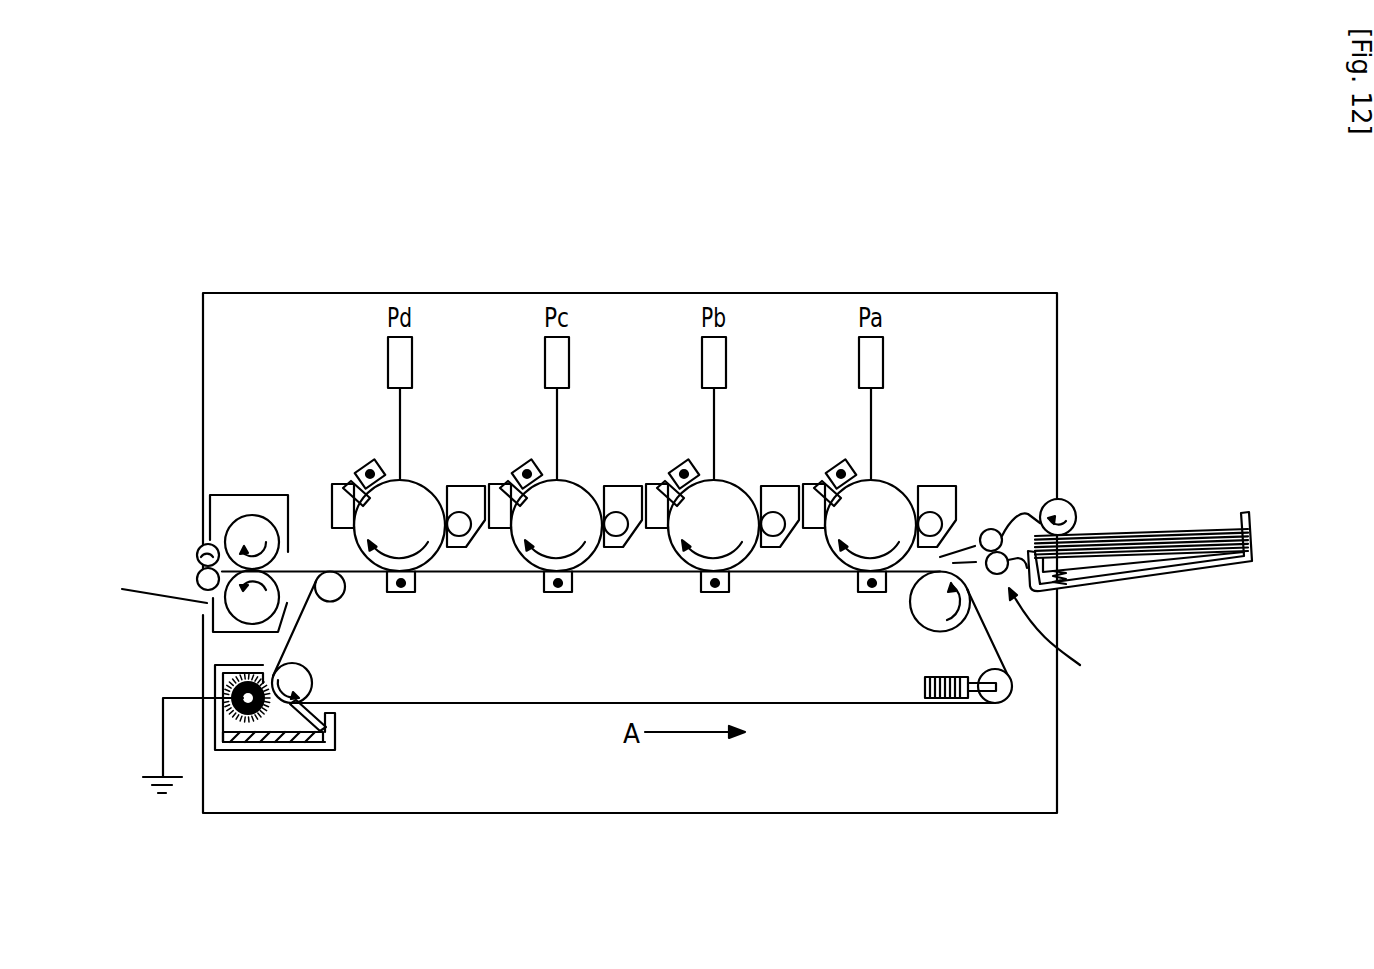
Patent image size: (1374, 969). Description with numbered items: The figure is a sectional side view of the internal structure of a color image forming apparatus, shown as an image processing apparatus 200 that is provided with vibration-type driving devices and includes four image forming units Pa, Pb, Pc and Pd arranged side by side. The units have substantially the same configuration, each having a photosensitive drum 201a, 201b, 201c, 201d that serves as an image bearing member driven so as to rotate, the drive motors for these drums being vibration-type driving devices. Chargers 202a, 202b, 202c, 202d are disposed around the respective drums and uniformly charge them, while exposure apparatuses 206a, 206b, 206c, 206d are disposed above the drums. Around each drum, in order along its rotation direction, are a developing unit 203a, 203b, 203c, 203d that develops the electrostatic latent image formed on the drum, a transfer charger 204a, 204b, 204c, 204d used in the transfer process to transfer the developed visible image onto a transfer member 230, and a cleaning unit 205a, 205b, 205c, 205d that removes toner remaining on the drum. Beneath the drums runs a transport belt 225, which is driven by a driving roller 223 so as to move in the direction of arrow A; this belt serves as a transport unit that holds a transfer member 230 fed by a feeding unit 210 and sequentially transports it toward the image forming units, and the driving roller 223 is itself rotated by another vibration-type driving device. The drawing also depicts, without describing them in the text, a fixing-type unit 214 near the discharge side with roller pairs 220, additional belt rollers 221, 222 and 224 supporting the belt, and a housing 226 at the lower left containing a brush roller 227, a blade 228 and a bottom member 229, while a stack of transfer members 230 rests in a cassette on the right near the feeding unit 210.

The image processing apparatus 200 is at (1057, 370).
The photosensitive drum 201a is at (878, 479).
The photosensitive drum 201b is at (721, 479).
The photosensitive drum 201c is at (564, 479).
The photosensitive drum 201d is at (415, 480).
The charger 202a is at (837, 441).
The charger 202b is at (680, 441).
The charger 202c is at (523, 441).
The charger 202d is at (373, 460).
The developing unit 203a is at (932, 487).
The developing unit 203b is at (775, 487).
The developing unit 203c is at (618, 487).
The developing unit 203d is at (458, 486).
The charger 204a is at (872, 612).
The charger 204b is at (715, 612).
The charger 204c is at (558, 612).
The charger 204d is at (402, 597).
The cleaning unit 205a is at (815, 551).
The cleaning unit 205b is at (658, 551).
The cleaning unit 205c is at (501, 551).
The cleaning unit 205d is at (330, 505).
The exposure apparatus 206a is at (908, 362).
The exposure apparatus 206b is at (751, 362).
The exposure apparatus 206c is at (594, 362).
The exposure apparatus 206d is at (412, 371).
The feeding unit 210 is at (1025, 606).
The fixing device 214 is at (241, 495).
The discharge rollers 220 is at (200, 547).
The driving roller 221 is at (940, 634).
The secondary transfer inner roller 222 is at (330, 602).
The driving roller 223 is at (312, 682).
The tension roller 224 is at (990, 703).
The transport belt 225 is at (867, 703).
The belt cleaning device 226 is at (218, 680).
The cleaning brush roller 227 is at (247, 678).
The cleaning blade 228 is at (305, 731).
The collection screw 229 is at (240, 745).
The transfer member 230 is at (1160, 530).